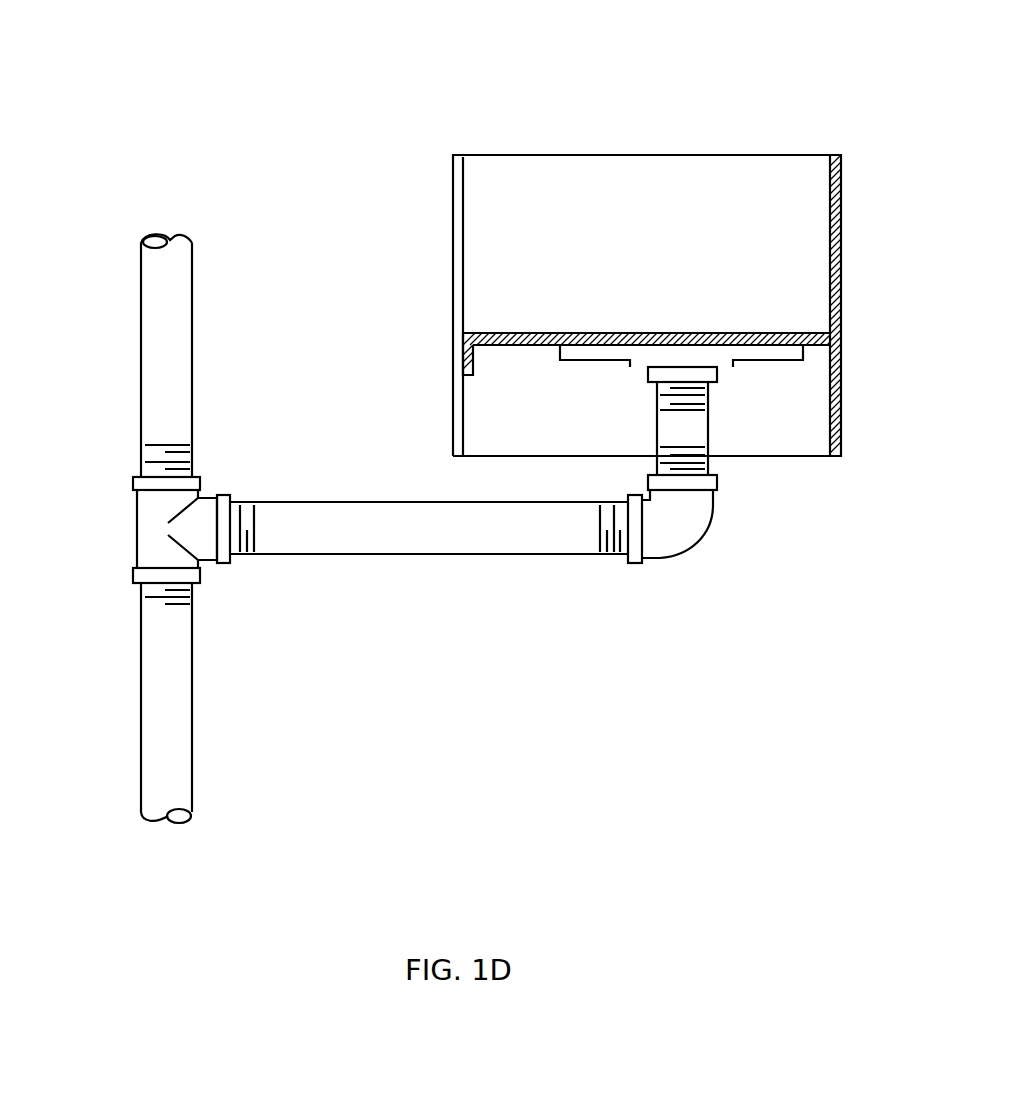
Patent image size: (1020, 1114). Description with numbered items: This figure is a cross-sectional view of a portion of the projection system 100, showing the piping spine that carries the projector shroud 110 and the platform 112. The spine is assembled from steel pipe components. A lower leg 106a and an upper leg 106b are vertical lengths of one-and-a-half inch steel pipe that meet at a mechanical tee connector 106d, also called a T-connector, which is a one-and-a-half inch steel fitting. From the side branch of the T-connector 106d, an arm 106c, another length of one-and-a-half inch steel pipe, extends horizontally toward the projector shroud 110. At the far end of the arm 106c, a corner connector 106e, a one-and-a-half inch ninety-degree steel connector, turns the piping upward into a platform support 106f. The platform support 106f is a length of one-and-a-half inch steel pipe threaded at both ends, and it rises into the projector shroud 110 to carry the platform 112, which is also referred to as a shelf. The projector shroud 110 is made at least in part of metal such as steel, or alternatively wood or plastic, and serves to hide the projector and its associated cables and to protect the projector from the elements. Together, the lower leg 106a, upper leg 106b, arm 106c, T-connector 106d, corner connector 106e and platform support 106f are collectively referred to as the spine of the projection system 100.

The projection system 100 is at (290, 68).
The lower leg 106a is at (192, 772).
The upper leg 106b is at (192, 338).
The arm 106c is at (423, 555).
The mechanical tee connector 106d is at (136, 532).
The corner connector 106e is at (668, 558).
The platform support 106f is at (708, 433).
The projector shroud 110 is at (841, 370).
The platform 112 is at (813, 333).